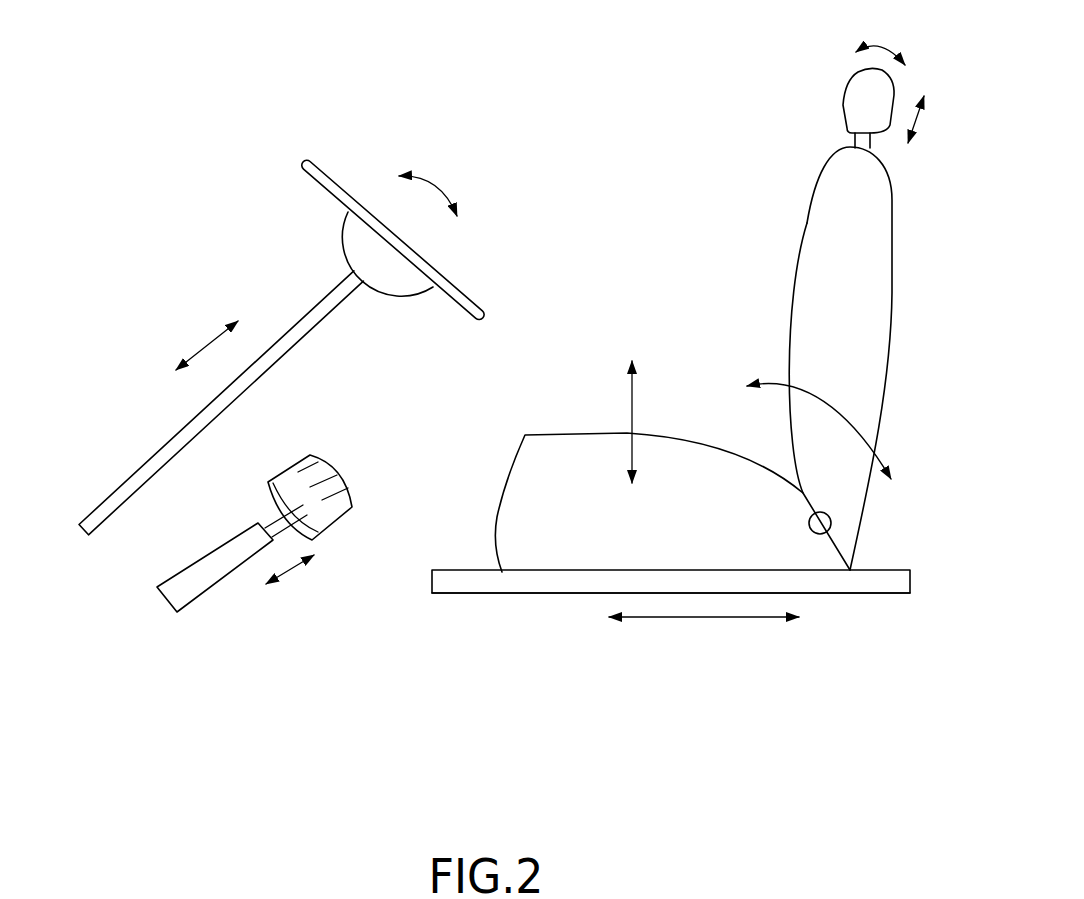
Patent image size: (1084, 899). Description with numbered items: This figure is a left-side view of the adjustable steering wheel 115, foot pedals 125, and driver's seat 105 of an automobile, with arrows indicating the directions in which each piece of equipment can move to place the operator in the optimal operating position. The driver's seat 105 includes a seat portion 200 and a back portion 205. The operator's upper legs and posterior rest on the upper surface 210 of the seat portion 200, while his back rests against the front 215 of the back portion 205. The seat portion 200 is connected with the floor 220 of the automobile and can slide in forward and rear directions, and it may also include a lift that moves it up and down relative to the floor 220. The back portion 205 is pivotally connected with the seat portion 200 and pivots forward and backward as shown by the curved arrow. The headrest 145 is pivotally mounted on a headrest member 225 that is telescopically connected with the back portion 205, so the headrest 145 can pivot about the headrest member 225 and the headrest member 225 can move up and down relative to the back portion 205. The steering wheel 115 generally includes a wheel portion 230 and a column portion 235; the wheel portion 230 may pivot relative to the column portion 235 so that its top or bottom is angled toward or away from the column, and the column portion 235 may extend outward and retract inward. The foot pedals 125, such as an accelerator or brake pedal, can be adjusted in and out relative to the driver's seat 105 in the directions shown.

The driver's seat 105 is at (705, 352).
The steering wheel 115 is at (306, 282).
The foot pedals 125 is at (236, 596).
The headrest 145 is at (852, 78).
The seat portion 200 is at (567, 543).
The back portion 205 is at (880, 308).
The upper surface 210 is at (583, 433).
The front 215 is at (807, 223).
The floor 220 is at (850, 593).
The headrest member 225 is at (853, 135).
The wheel portion 230 is at (306, 160).
The column portion 235 is at (160, 445).